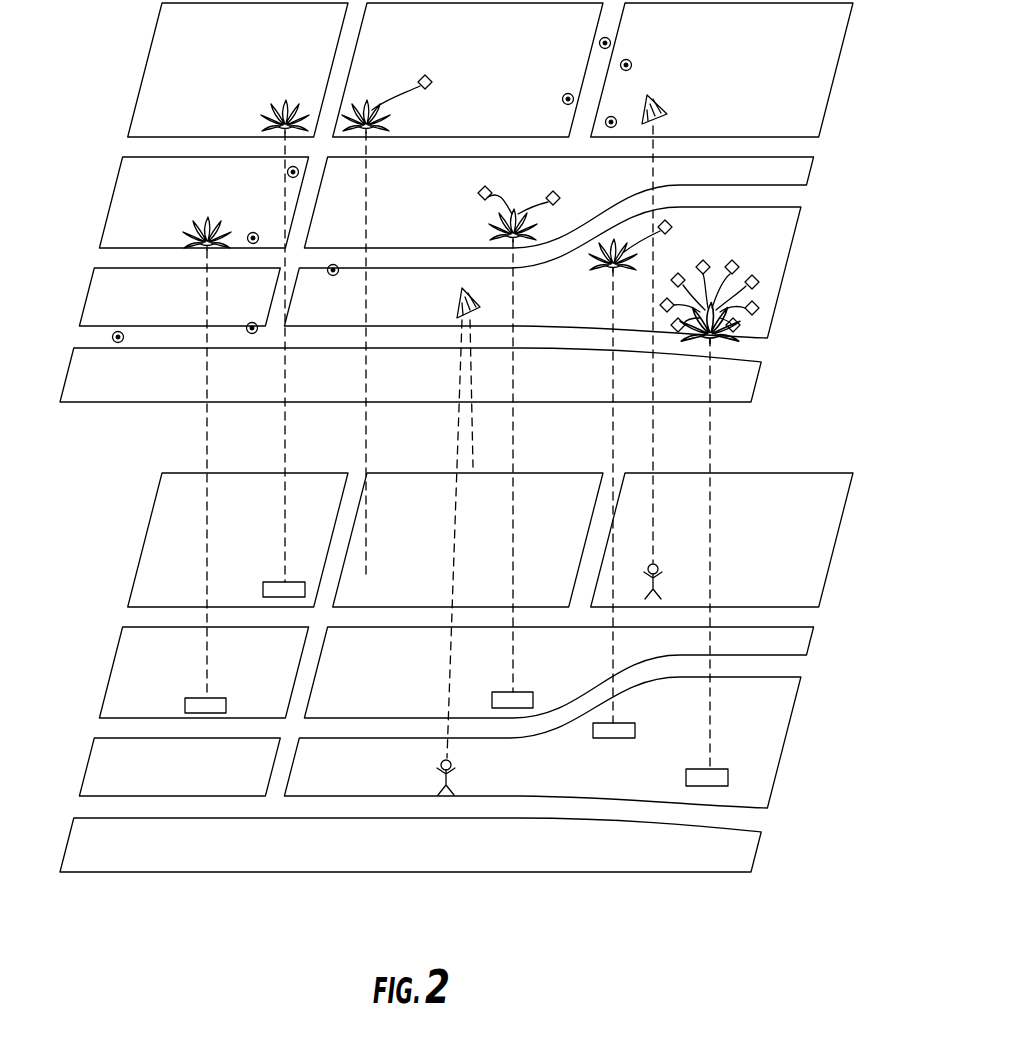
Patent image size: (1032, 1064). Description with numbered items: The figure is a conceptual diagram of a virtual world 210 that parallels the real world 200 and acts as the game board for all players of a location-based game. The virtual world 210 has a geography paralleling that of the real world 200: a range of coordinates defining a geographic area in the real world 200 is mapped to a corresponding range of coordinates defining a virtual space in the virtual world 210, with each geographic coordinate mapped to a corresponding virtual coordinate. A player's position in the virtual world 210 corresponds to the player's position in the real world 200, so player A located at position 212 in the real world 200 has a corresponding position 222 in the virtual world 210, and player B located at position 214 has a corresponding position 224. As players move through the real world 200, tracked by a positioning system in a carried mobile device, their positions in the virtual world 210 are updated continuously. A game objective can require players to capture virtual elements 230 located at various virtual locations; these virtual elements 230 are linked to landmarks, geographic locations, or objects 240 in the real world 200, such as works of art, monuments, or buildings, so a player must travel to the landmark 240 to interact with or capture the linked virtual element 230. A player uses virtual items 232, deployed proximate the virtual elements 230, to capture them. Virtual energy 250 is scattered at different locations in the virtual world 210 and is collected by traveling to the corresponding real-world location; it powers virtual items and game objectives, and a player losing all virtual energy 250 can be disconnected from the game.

The real world 200 is at (825, 580).
The virtual world 210 is at (823, 115).
The position of player A in the real world 212 is at (440, 767).
The position of player B in the real world 214 is at (658, 566).
The position of player A in the virtual world 222 is at (480, 307).
The position of player B in the virtual world 224 is at (668, 112).
The virtual elements 230 is at (285, 110).
The virtual items 232 is at (430, 80).
The real world landmarks or objects 240 is at (278, 580).
The virtual energy 250 is at (633, 63).